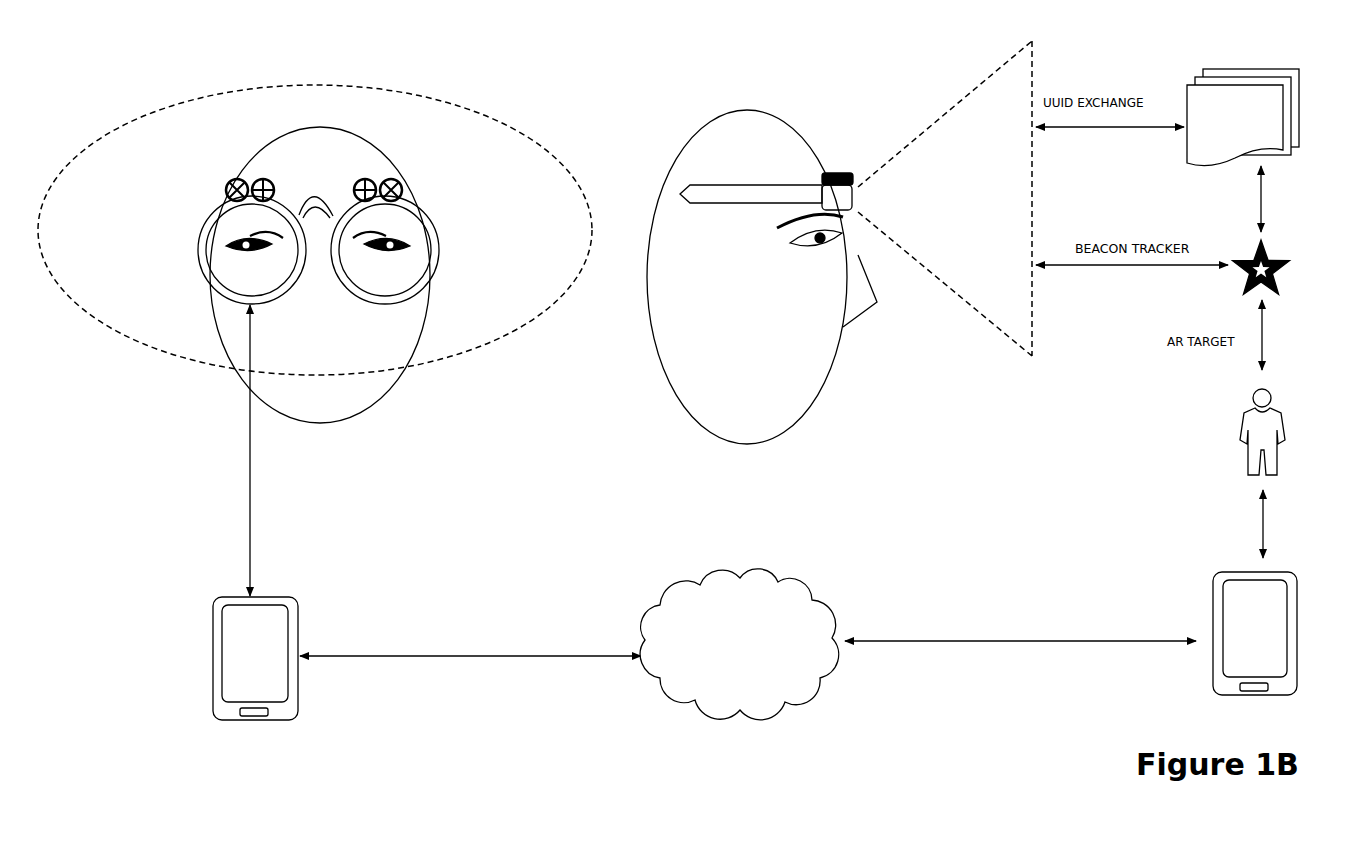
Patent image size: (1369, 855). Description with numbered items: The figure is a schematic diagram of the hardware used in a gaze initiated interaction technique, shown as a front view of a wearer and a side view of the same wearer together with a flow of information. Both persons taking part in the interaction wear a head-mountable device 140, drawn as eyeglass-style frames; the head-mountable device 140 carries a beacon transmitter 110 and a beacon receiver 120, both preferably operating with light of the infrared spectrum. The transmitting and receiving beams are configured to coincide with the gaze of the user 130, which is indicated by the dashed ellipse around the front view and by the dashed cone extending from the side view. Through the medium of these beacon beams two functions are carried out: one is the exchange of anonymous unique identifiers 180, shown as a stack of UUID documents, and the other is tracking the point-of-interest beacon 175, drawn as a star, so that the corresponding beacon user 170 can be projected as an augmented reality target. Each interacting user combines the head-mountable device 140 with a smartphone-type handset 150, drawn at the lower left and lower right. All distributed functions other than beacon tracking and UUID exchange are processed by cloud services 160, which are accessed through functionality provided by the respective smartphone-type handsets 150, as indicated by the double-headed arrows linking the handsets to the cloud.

The beacon transmitter 110 is at (229, 177).
The beacon receiver 120 is at (371, 177).
The gaze of the user 130 is at (544, 148).
The head-mountable device 140 is at (444, 250).
The smartphone-type handset 150 is at (279, 594).
The cloud services 160 is at (798, 570).
The beacon user 170 is at (1298, 427).
The point-of-interest beacon 175 is at (397, 408).
The anonymous unique identifiers 180 is at (1309, 110).